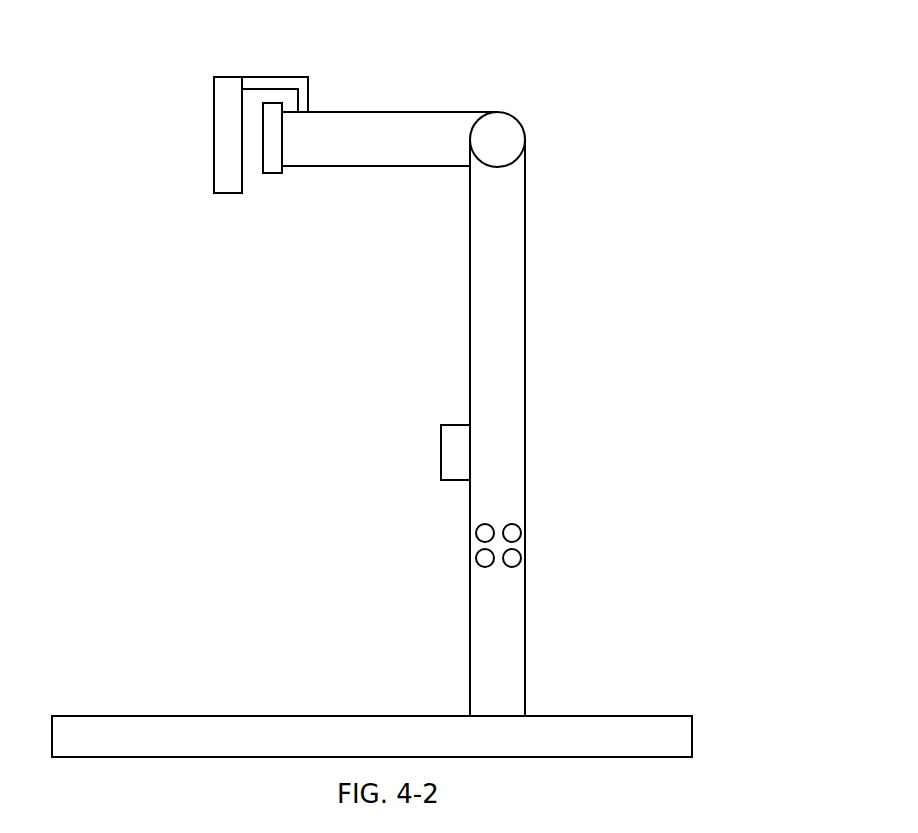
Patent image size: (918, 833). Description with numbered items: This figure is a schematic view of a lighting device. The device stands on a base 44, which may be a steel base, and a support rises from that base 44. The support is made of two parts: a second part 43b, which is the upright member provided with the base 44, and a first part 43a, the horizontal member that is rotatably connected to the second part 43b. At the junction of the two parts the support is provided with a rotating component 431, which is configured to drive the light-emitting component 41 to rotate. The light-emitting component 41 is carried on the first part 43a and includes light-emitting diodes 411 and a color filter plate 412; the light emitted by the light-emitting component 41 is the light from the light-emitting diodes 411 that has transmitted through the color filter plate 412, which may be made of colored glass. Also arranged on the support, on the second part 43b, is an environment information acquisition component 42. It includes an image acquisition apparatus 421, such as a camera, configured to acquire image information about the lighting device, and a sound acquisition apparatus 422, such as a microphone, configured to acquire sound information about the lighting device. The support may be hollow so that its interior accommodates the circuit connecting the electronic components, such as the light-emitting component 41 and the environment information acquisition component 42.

The light-emitting component 41 is at (223, 280).
The light-emitting diodes 411 is at (273, 158).
The color filter plate 412 is at (230, 125).
The environment information acquisition component 42 is at (352, 470).
The image acquisition apparatus 421 is at (452, 449).
The sound acquisition apparatus 422 is at (483, 535).
The first part 43a is at (375, 130).
The second part 43b is at (507, 305).
The rotating component 431 is at (507, 133).
The base 44 is at (507, 680).